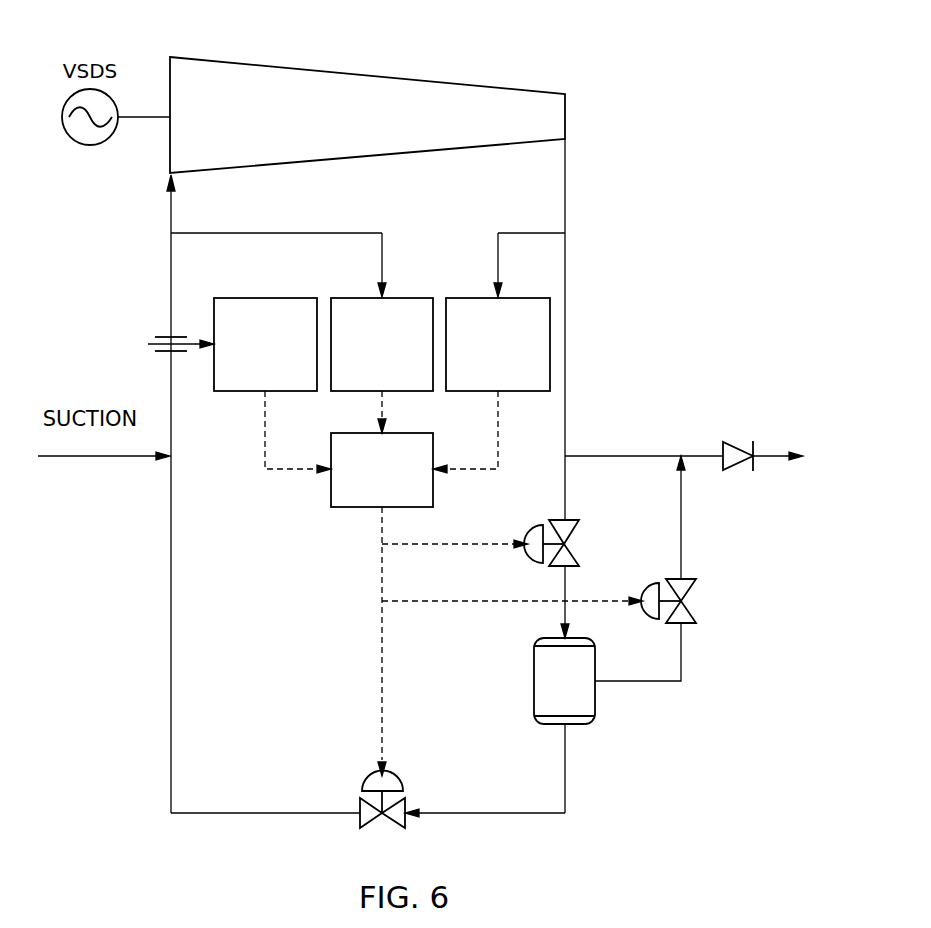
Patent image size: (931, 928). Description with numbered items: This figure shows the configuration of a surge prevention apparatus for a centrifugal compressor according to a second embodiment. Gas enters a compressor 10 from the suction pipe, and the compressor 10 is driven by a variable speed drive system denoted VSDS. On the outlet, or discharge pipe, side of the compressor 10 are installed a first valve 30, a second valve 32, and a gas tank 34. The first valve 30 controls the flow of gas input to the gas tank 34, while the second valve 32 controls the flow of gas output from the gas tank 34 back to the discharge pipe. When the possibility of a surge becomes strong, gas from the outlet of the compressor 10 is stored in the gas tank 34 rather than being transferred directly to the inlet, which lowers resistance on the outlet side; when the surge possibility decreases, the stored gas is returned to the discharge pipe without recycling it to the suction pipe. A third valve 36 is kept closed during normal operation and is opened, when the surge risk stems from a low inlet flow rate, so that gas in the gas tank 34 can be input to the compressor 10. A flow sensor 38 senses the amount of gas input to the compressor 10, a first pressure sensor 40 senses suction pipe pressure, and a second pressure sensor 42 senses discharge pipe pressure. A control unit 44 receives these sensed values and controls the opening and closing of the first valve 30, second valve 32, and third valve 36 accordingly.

The compressor 10 is at (372, 72).
The first valve 30 is at (553, 520).
The second valve 32 is at (668, 583).
The gas tank 34 is at (534, 681).
The third valve 36 is at (405, 800).
The flow sensor 38 is at (267, 296).
The first pressure sensor 40 is at (410, 296).
The second pressure sensor 42 is at (471, 296).
The control unit 44 is at (434, 494).